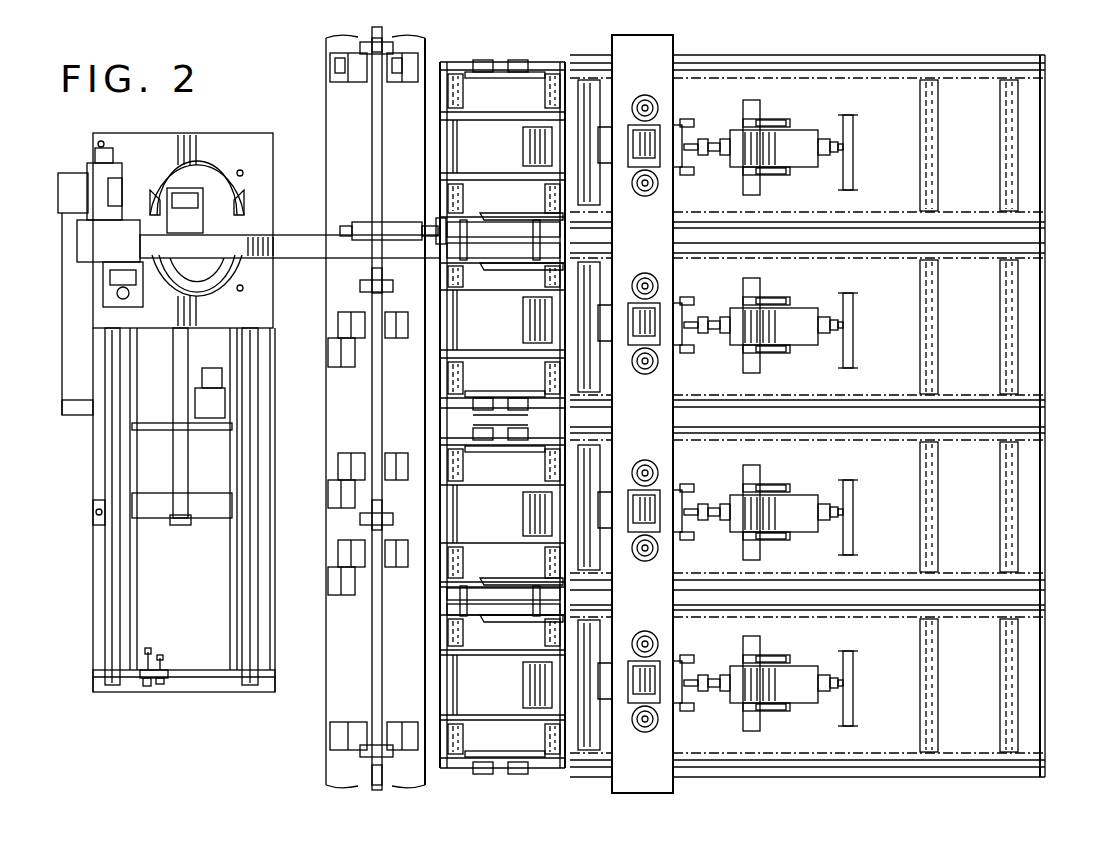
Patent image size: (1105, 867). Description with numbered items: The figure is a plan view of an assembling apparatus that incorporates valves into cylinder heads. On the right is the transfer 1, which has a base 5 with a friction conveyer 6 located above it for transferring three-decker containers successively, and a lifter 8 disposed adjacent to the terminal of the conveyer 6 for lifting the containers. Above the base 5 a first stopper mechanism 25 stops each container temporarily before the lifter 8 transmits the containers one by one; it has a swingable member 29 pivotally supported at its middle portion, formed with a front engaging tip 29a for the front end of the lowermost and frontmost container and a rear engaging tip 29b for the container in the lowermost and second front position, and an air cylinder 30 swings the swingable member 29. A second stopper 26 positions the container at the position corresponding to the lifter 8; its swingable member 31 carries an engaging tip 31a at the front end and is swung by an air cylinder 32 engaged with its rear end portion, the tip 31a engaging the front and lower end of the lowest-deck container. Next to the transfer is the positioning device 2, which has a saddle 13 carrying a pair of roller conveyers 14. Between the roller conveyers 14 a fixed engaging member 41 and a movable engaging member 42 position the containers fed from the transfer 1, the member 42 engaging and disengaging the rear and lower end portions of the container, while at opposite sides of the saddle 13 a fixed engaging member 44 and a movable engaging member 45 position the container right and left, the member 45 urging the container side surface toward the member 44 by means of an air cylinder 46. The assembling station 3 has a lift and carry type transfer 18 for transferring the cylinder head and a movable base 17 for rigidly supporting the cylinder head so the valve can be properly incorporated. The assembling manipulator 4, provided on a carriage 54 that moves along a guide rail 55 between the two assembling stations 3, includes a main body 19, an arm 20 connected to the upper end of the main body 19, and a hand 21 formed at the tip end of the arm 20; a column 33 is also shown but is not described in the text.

The transfer 1 is at (1048, 97).
The positioning device 2 is at (478, 58).
The assembling station 3 is at (322, 300).
The assembling manipulator 4 is at (244, 198).
The base 5 is at (841, 62).
The friction conveyer 6 is at (1012, 132).
The lifter 8 is at (652, 130).
The saddle 13 is at (440, 146).
The roller conveyers 14 is at (448, 98).
The movable base 17 is at (338, 330).
The lift and carry type transfer 18 is at (345, 52).
The main body 19 is at (203, 200).
The arm 20 is at (300, 236).
The hand 21 is at (444, 218).
The first stopper mechanism 25 is at (800, 128).
The second stopper 26 is at (692, 140).
The swingable member 29 is at (797, 168).
The front engaging tip 29a is at (745, 165).
The rear engaging tip 29b is at (843, 128).
The air cylinder 30 is at (836, 152).
The swingable member 31 is at (604, 165).
The engaging tip 31a is at (606, 120).
The air cylinder 32 is at (714, 152).
The column 33 is at (612, 50).
The fixed engaging member 41 is at (458, 148).
The movable engaging member 42 is at (523, 158).
The fixed engaging member 44 is at (505, 190).
The movable engaging member 45 is at (500, 79).
The air cylinder 46 is at (483, 60).
The carriage 54 is at (262, 145).
The guide rail 55 is at (108, 595).